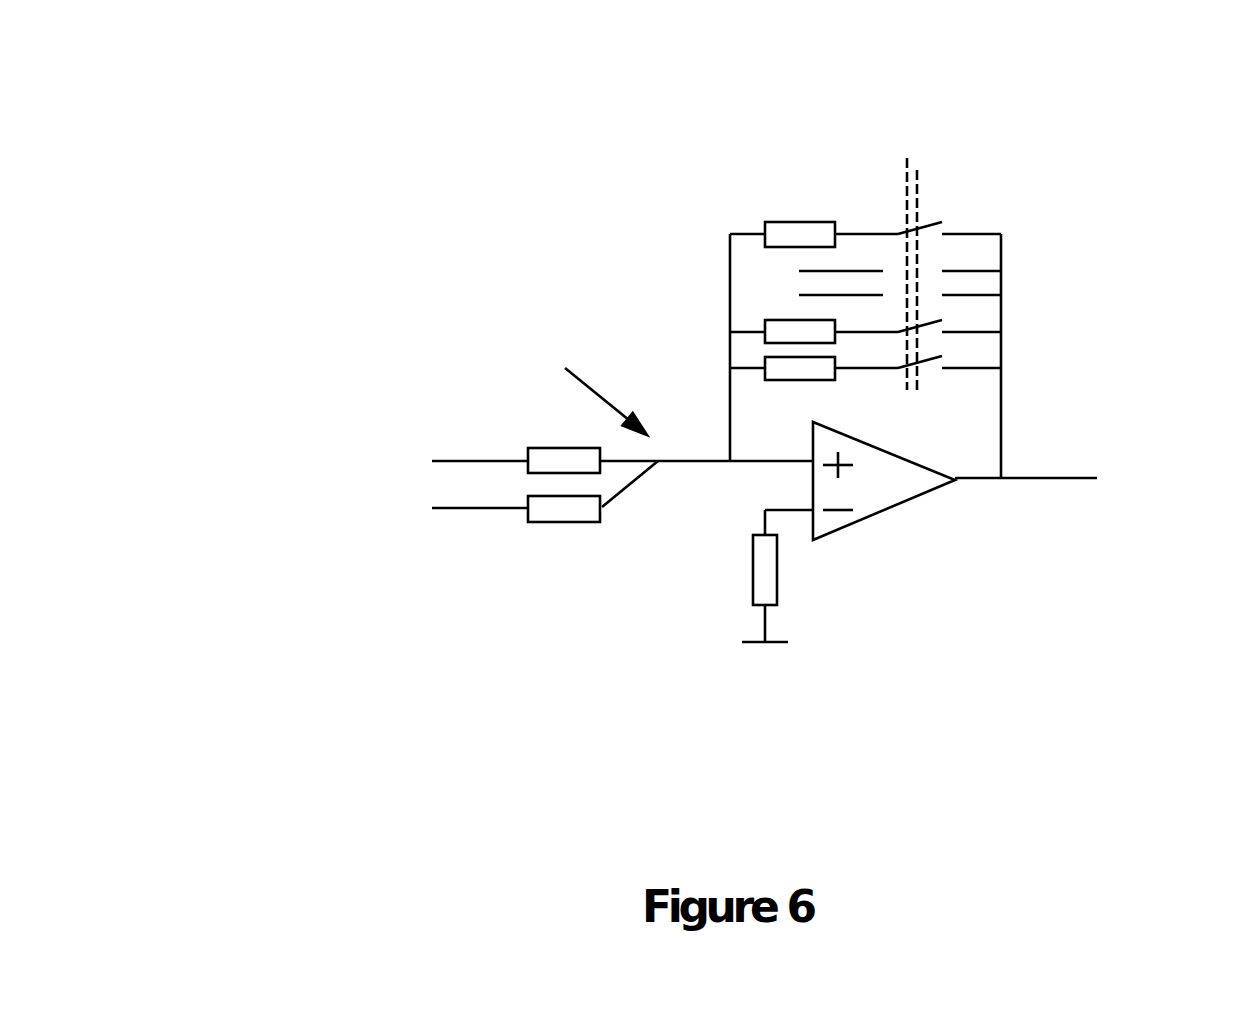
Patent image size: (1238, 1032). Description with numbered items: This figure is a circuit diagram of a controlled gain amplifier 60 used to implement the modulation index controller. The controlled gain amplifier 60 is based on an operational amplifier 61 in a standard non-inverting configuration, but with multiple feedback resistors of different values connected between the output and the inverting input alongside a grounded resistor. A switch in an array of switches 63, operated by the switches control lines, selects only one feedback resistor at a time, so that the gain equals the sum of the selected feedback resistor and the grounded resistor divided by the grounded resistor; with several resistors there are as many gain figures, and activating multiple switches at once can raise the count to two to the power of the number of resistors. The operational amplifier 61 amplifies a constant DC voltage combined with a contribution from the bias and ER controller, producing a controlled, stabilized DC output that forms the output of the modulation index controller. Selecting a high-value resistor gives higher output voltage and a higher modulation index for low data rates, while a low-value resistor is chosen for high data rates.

The controlled gain amplifier 60 is at (646, 359).
The operational amplifier 61 is at (895, 500).
The array of switches 63 is at (940, 215).